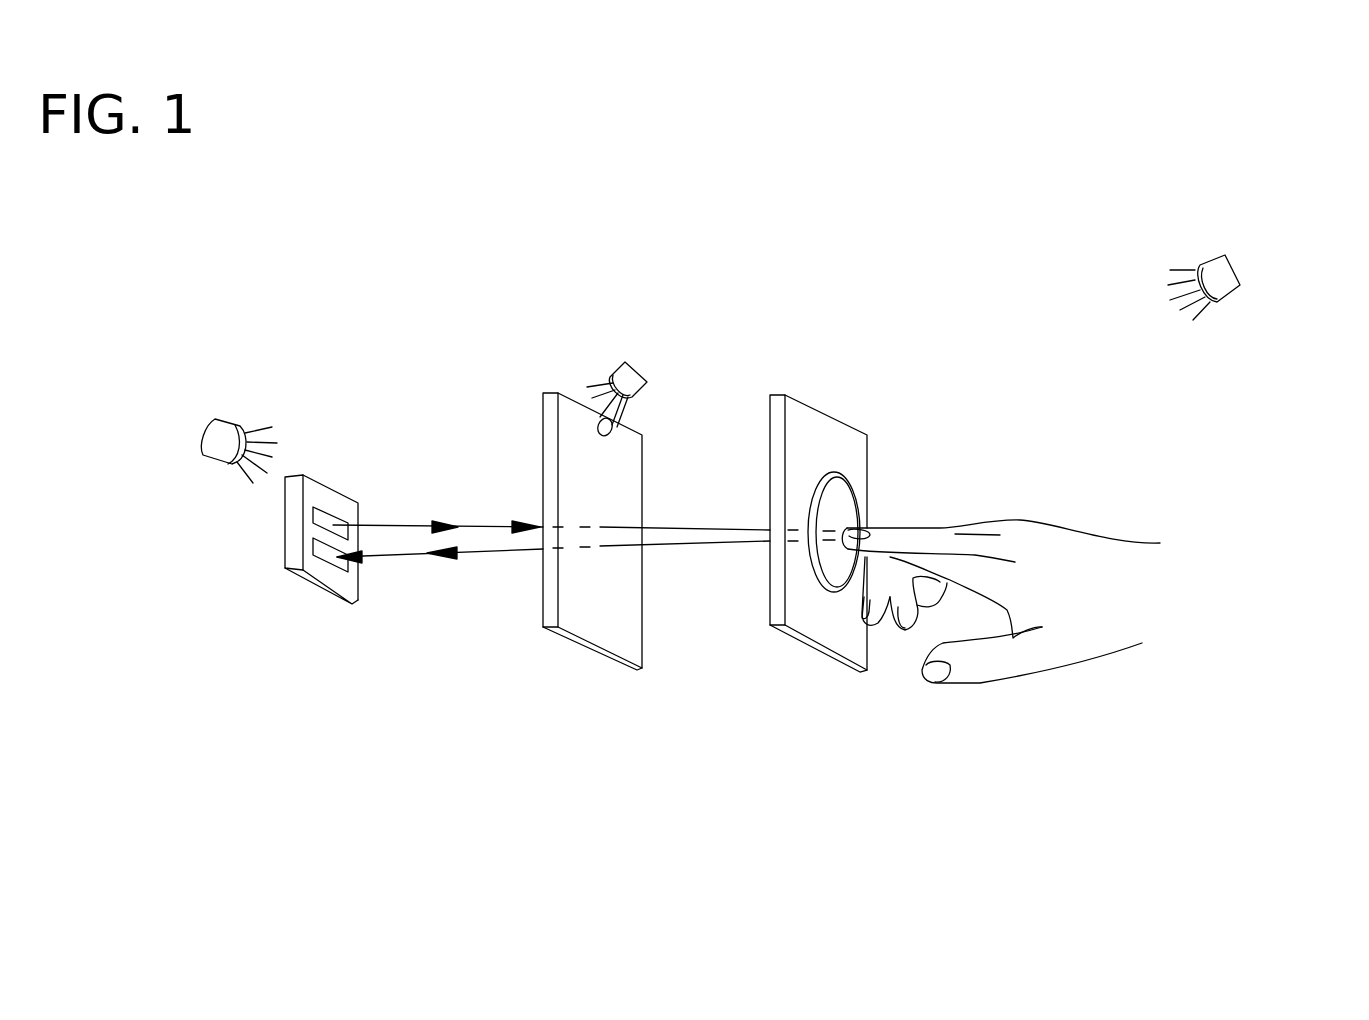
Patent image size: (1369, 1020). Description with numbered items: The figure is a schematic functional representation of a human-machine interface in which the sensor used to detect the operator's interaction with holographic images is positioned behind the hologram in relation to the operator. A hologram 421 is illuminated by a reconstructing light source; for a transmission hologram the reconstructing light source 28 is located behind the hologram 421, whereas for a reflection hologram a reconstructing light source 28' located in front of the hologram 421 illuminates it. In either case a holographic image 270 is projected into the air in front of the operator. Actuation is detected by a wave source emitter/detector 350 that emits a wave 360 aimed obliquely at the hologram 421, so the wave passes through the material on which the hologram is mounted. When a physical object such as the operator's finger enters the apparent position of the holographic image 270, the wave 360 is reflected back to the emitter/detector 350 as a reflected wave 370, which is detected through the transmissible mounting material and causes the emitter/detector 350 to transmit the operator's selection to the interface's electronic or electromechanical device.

The reconstructing light source 28 is at (229, 391).
The reconstructing light source 28' is at (1263, 283).
The wave source emitter/detector 350 is at (322, 572).
The wave 360 is at (403, 523).
The reflected wave 370 is at (473, 552).
The hologram 421 is at (590, 622).
The holographic image 270 is at (840, 448).